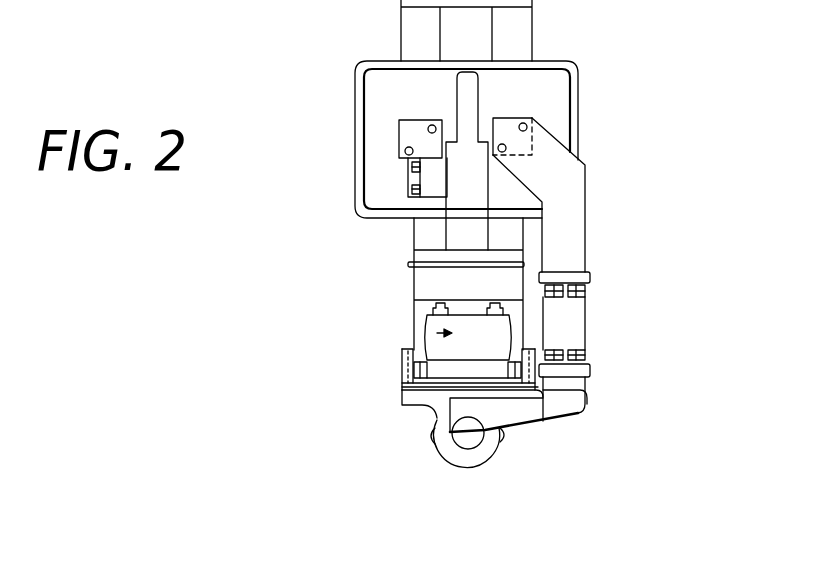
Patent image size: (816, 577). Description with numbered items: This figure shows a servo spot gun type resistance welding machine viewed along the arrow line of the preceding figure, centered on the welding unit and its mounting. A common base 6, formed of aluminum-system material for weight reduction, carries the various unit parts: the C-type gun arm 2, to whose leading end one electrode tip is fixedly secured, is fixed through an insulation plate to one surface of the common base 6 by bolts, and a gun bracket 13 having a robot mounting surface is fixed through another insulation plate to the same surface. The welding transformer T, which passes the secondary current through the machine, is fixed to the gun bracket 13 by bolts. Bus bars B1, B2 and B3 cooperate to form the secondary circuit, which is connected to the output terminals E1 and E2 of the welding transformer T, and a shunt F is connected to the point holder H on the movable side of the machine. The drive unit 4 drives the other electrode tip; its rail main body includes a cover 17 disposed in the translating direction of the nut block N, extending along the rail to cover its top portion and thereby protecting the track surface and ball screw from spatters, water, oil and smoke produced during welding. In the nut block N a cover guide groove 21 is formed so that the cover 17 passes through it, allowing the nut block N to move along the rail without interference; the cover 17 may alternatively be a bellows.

The gun bracket 13 is at (357, 91).
The welding transformer T is at (548, 100).
The output terminal E2 is at (399, 135).
The output terminal E1 is at (535, 131).
The bus bar B2 is at (430, 177).
The bus bar B1 is at (572, 202).
The gun arm 2 is at (457, 222).
The common base 6 is at (427, 283).
The drive unit 4 is at (425, 332).
The nut block N is at (470, 372).
The cover guide groove 21 is at (540, 387).
The cover 17 is at (497, 390).
The point holder H is at (468, 433).
The shunt F is at (572, 320).
The bus bar B3 is at (557, 405).